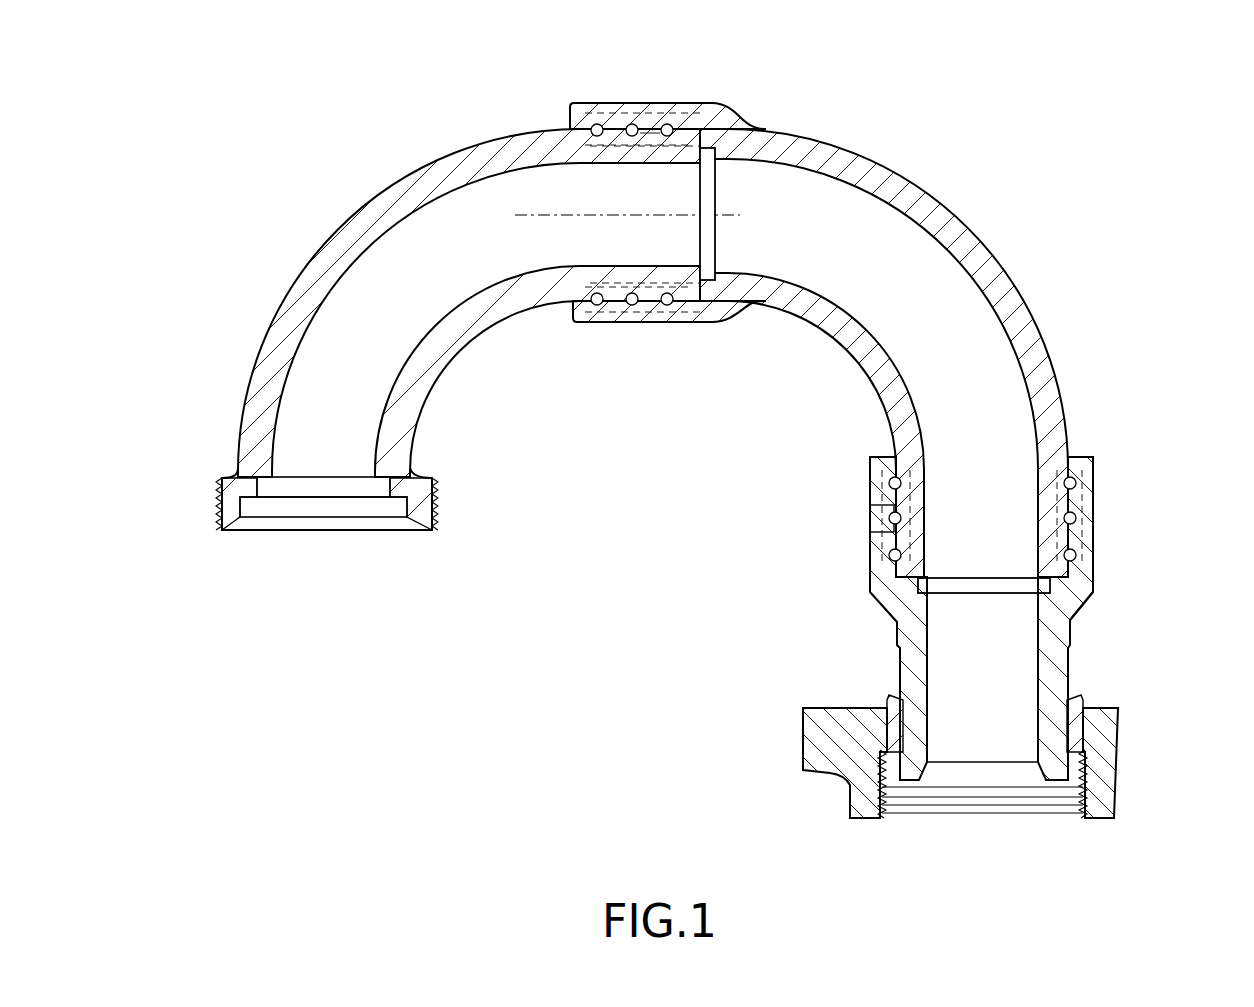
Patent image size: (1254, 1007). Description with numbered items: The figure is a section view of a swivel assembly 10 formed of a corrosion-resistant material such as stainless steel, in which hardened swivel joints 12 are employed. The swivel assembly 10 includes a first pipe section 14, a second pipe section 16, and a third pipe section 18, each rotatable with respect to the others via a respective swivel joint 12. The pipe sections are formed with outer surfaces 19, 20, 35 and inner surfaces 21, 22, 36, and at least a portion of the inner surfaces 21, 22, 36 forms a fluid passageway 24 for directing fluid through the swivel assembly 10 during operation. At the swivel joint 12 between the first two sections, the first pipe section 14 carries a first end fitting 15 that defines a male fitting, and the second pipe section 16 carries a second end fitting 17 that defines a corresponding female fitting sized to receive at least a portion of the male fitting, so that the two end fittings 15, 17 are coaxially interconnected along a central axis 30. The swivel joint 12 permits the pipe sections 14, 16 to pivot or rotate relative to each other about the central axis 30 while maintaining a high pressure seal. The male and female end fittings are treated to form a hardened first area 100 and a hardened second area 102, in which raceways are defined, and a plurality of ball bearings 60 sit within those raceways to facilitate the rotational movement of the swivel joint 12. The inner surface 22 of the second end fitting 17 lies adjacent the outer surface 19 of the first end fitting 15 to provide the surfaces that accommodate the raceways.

The swivel assembly 10 is at (699, 423).
The swivel joint 12 is at (902, 404).
The first pipe section 14 is at (432, 322).
The first end fitting 15 is at (647, 135).
The second pipe section 16 is at (887, 358).
The second end fitting 17 is at (618, 103).
The third pipe section 18 is at (972, 698).
The outer surface 19 is at (252, 364).
The outer surface 20 is at (866, 355).
The inner surface 21 is at (405, 235).
The inner surface 22 is at (985, 292).
The fluid passageway 24 is at (412, 344).
The central axis 30 is at (629, 218).
The outer surface 35 is at (1070, 620).
The inner surface 36 is at (1035, 655).
The ball bearings 60 is at (665, 297).
The hardened first area 100 is at (608, 146).
The hardened second area 102 is at (620, 300).